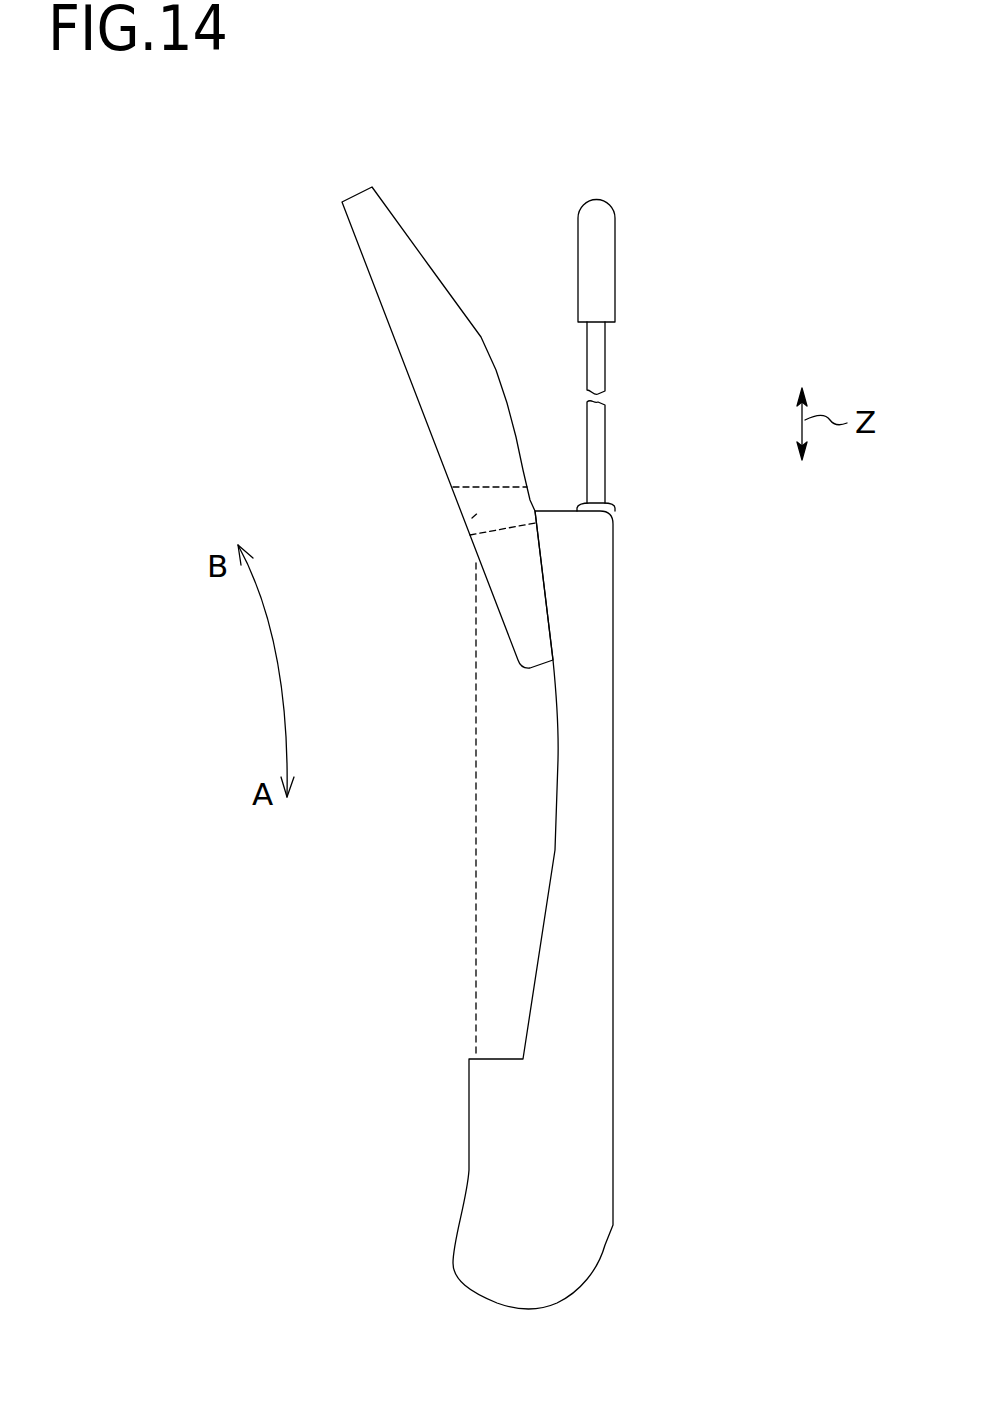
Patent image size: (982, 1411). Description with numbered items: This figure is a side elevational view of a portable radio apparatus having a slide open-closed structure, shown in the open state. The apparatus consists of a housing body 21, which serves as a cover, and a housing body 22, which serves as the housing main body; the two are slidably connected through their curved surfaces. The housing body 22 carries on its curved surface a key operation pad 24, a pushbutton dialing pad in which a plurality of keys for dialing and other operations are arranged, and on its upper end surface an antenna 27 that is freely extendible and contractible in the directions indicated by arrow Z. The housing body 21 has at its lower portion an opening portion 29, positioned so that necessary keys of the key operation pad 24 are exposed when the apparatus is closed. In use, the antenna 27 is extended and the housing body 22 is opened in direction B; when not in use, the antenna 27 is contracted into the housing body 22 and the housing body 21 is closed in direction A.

The housing body 21 is at (407, 327).
The housing body 22 is at (600, 1270).
The key operation pad 24 is at (507, 867).
The antenna 27 is at (616, 267).
The opening portion 29 is at (466, 521).